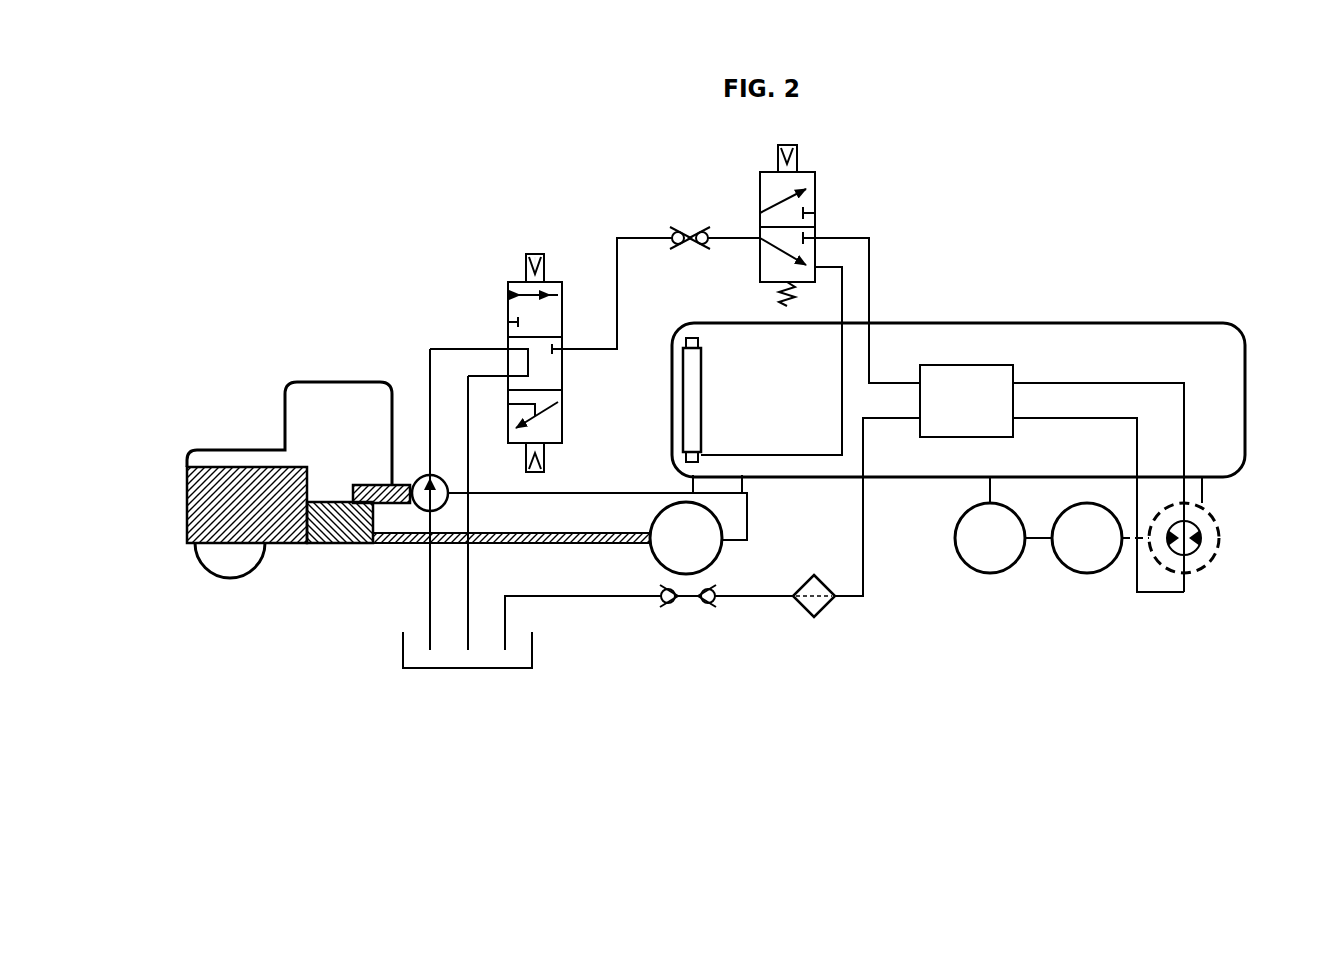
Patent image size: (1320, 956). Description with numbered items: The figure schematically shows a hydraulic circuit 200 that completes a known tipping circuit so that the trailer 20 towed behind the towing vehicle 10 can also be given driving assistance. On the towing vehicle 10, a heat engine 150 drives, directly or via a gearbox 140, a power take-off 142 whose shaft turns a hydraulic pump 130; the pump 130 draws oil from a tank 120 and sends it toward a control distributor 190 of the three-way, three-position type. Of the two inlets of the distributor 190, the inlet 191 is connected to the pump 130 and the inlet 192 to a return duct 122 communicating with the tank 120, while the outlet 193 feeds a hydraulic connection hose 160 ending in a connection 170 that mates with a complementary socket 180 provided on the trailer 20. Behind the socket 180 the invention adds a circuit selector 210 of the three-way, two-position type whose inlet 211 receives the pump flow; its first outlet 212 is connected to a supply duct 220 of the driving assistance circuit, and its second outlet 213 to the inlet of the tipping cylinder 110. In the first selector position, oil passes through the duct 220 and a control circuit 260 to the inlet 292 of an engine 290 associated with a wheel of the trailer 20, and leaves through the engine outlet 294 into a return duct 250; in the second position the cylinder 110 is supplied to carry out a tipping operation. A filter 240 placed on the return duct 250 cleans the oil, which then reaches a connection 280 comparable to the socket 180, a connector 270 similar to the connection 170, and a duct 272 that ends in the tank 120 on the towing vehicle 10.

The towing vehicle 10 is at (315, 352).
The trailer 20 is at (1037, 263).
The cylinder 110 is at (712, 398).
The tank 120 is at (403, 640).
The return duct 122 is at (468, 584).
The hydraulic pump 130 is at (418, 478).
The gearbox 140 is at (328, 527).
The power take-off 142 is at (395, 505).
The heat engine 150 is at (215, 502).
The hydraulic connection hose 160 is at (637, 243).
The connection 170 is at (668, 228).
The socket 180 is at (716, 250).
The control distributor 190 is at (582, 377).
The inlet 191 is at (508, 296).
The inlet 192 is at (508, 322).
The outlet 193 is at (562, 290).
The hydraulic circuit 200 is at (413, 240).
The circuit selector 210 is at (742, 173).
The inlet 211 is at (760, 212).
The outlet 212 is at (812, 186).
The outlet 213 is at (815, 213).
The supply duct 220 is at (870, 280).
The filter 240 is at (828, 608).
The return duct 250 is at (759, 596).
The control circuit 260 is at (966, 401).
The connector 270 is at (660, 604).
The duct 272 is at (505, 633).
The connection 280 is at (718, 604).
The engine 290 is at (1204, 554).
The inlet 292 is at (1095, 383).
The outlet 294 is at (1095, 418).